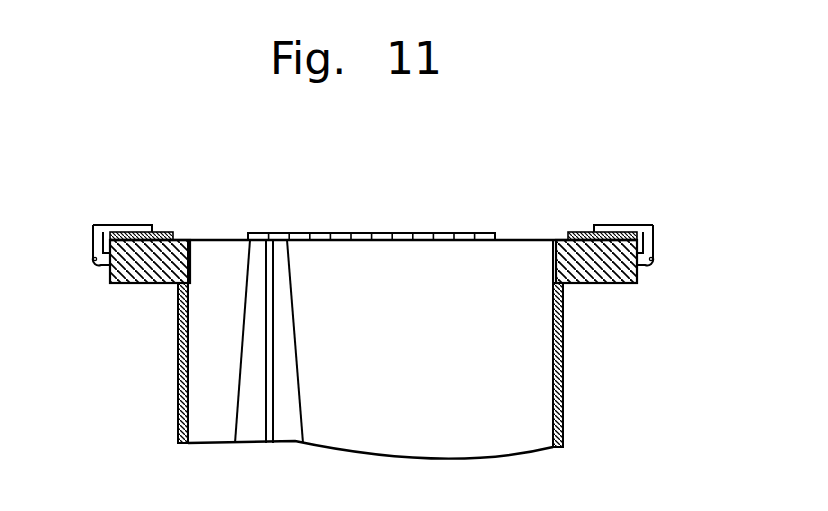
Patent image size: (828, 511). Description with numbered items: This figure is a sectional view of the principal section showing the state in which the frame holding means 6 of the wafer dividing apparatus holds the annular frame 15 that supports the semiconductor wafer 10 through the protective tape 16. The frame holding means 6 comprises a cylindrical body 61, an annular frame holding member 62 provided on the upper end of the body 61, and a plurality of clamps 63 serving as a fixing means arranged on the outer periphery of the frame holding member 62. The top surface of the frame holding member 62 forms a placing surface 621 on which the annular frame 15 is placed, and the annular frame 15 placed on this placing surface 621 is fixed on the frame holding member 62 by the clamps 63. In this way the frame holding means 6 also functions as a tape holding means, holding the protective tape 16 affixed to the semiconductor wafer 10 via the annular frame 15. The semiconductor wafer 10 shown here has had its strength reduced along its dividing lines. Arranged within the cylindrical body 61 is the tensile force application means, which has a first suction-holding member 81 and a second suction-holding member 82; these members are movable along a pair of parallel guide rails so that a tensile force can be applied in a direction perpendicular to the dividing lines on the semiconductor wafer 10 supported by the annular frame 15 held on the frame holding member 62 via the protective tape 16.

The frame holding means 6 is at (362, 303).
The semiconductor wafer 10 is at (381, 232).
The annular frame 15 is at (162, 232).
The protective tape 16 is at (232, 237).
The cylindrical body 61 is at (565, 412).
The annular frame holding member 62 is at (605, 284).
The placing surface 621 is at (561, 232).
The clamps 63 is at (622, 229).
The first suction-holding member 81 is at (286, 328).
The second suction-holding member 82 is at (258, 330).